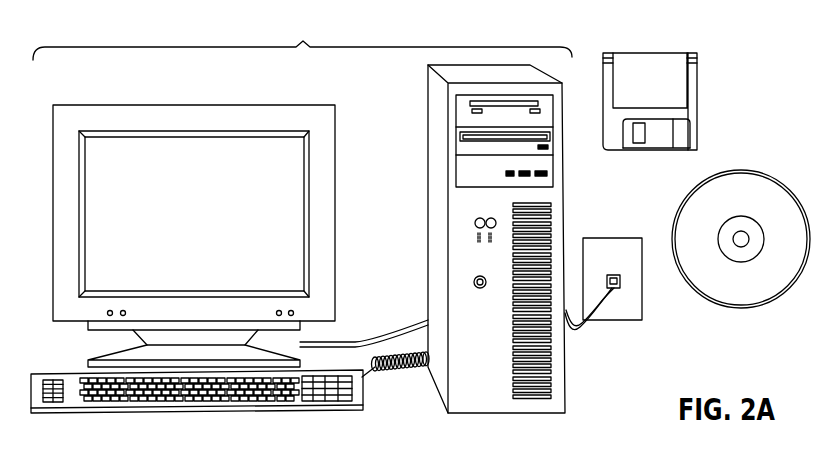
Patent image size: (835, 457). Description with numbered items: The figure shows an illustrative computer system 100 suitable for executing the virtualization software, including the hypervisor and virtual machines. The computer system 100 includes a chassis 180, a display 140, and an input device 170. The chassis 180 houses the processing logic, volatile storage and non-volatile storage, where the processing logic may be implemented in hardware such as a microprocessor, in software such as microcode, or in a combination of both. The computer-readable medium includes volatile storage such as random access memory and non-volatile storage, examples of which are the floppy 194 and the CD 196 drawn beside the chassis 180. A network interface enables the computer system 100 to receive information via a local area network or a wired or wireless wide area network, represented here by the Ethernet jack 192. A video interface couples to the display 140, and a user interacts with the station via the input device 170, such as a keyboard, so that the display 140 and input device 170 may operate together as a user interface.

The computer system 100 is at (303, 41).
The display 140 is at (77, 322).
The input device 170 is at (75, 413).
The chassis 180 is at (430, 274).
The Ethernet jack 192 is at (603, 238).
The floppy 194 is at (697, 129).
The CD 196 is at (751, 170).